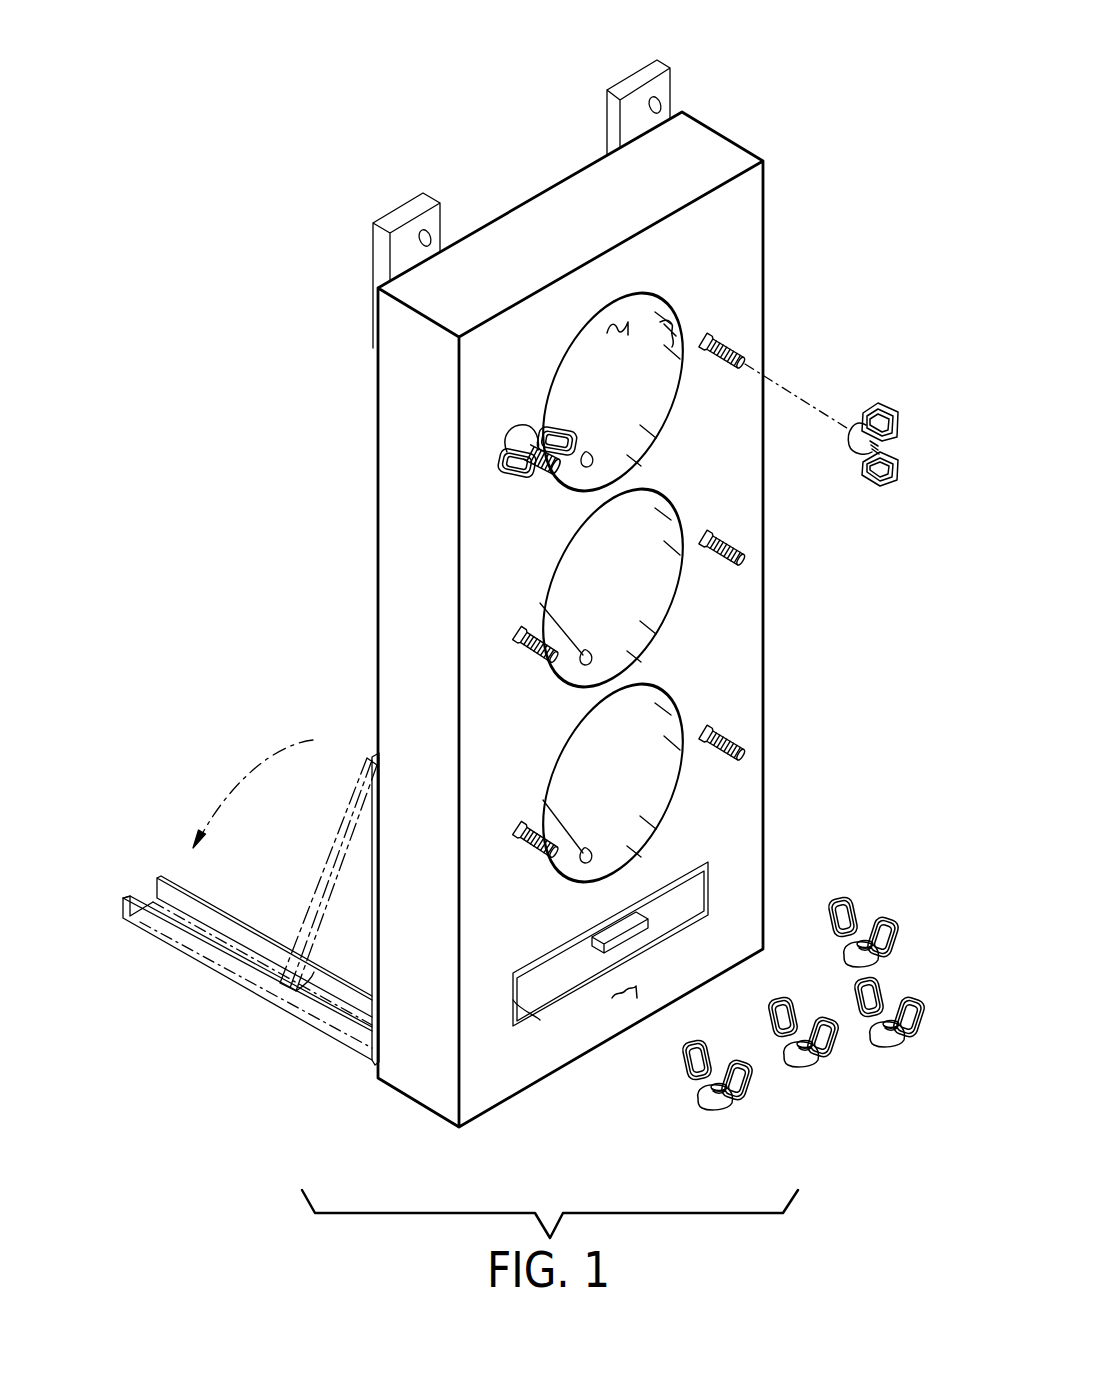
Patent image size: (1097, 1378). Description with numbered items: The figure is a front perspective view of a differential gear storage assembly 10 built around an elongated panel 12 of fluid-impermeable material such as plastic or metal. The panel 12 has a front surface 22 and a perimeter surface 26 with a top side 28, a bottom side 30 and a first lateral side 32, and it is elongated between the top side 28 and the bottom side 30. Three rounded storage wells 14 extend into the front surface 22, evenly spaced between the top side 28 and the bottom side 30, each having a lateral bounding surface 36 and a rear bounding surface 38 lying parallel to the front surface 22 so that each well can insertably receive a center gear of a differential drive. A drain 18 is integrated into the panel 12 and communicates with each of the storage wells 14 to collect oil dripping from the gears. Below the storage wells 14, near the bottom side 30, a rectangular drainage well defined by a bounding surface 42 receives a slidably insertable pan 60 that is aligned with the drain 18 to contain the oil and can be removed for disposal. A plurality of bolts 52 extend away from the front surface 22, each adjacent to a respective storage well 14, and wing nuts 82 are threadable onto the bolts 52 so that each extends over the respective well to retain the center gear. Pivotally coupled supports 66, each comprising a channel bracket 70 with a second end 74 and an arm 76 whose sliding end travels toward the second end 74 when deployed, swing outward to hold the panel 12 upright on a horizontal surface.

The differential gear storage assembly 10 is at (232, 148).
The panel 12 is at (752, 140).
The storage wells 14 is at (643, 392).
The drain 18 is at (585, 451).
The front surface 22 is at (619, 997).
The perimeter surface 26 is at (416, 526).
The top side 28 is at (472, 268).
The bottom side 30 is at (305, 990).
The first lateral side 32 is at (423, 1087).
The lateral bounding surface 36 is at (672, 322).
The rear bounding surface 38 is at (626, 318).
The bounding surface 42 is at (513, 1000).
The bolts 52 is at (745, 362).
The pan 60 is at (693, 898).
The supports 66 is at (317, 866).
The channel bracket 70 is at (258, 997).
The second end 74 is at (122, 906).
The arm 76 is at (310, 906).
The wing nuts 82 is at (720, 1100).